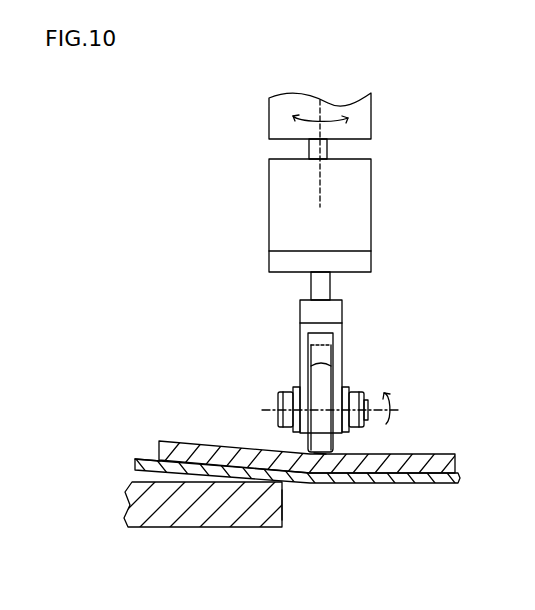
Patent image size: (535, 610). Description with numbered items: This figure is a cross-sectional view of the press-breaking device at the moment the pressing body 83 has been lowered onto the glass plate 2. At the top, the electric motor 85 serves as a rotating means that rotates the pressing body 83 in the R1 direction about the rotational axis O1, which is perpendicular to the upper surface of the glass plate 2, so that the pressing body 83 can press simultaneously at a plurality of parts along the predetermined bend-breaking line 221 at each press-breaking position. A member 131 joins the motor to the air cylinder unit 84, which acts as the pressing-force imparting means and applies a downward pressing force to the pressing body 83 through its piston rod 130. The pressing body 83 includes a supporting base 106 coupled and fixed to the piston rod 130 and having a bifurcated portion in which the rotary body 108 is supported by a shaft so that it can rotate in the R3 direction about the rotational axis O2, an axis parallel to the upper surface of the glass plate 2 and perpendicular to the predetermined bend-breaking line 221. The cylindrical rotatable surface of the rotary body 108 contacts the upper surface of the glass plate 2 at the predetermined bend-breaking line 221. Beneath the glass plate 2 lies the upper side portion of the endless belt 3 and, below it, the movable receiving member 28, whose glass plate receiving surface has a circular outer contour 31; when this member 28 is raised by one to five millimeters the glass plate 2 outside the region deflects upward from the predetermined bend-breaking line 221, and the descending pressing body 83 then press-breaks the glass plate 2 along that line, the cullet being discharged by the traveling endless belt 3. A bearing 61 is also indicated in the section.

The electric motor 85 is at (280, 117).
The rotational axis O1 is at (323, 108).
The R1 direction R1 is at (350, 121).
The shaft 131 is at (328, 149).
The air cylinder unit 84 is at (358, 203).
The piston rod 130 is at (326, 287).
The pressing body 83 is at (344, 339).
The supporting base 106 is at (305, 357).
The rotary body 108 is at (321, 383).
The rotational axis O2 is at (270, 409).
The R3 direction R3 is at (380, 396).
The glass plate 2 is at (440, 463).
The endless belt 3 is at (430, 481).
The bearing 61 is at (131, 481).
The predetermined bend-breaking line 221 is at (320, 460).
The movable receiving member 28 is at (152, 515).
The circular outer contour 31 is at (284, 515).